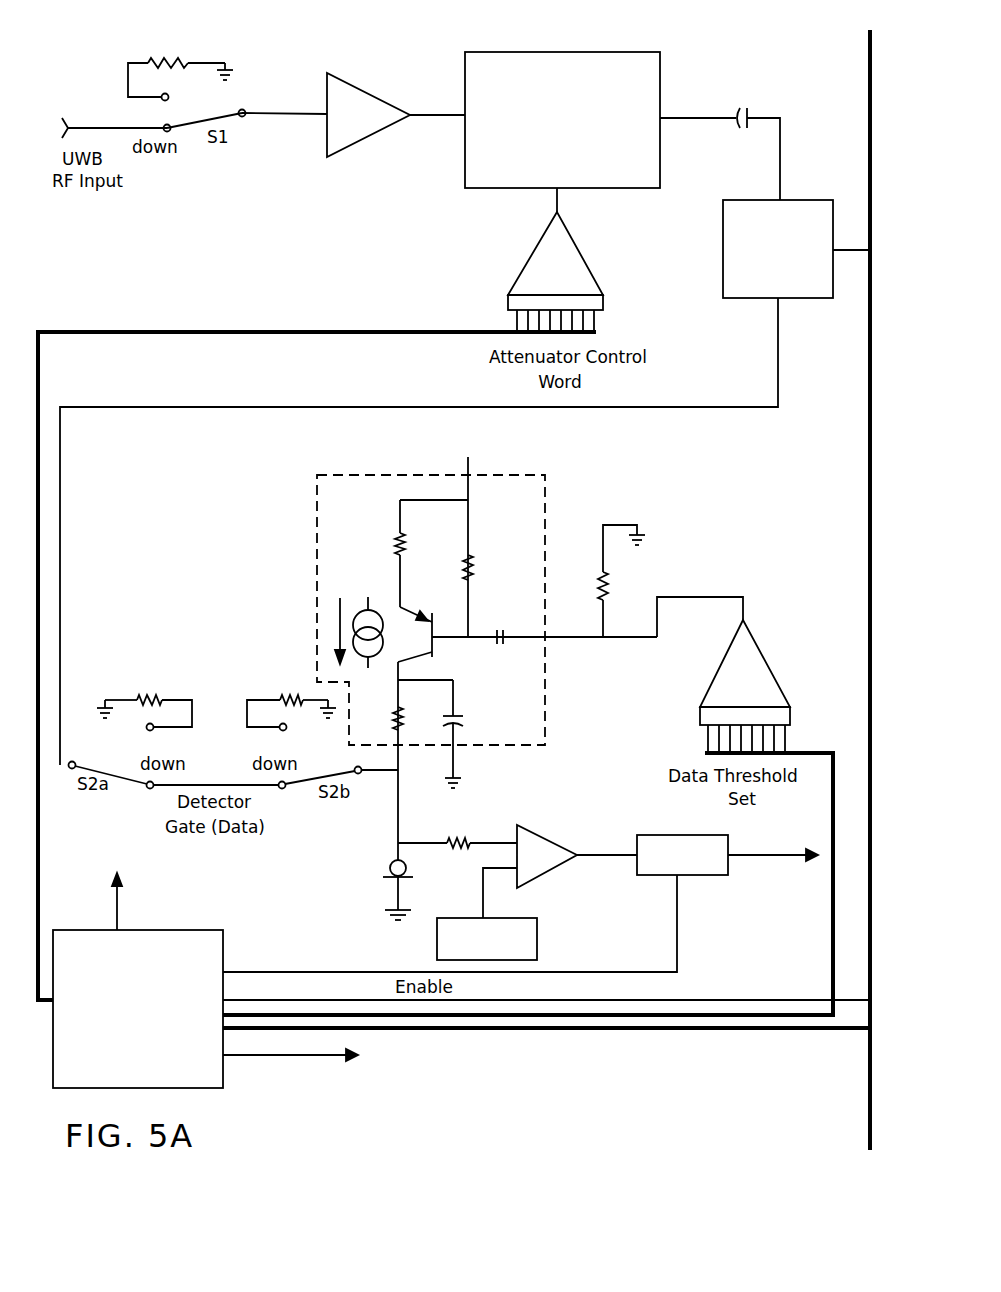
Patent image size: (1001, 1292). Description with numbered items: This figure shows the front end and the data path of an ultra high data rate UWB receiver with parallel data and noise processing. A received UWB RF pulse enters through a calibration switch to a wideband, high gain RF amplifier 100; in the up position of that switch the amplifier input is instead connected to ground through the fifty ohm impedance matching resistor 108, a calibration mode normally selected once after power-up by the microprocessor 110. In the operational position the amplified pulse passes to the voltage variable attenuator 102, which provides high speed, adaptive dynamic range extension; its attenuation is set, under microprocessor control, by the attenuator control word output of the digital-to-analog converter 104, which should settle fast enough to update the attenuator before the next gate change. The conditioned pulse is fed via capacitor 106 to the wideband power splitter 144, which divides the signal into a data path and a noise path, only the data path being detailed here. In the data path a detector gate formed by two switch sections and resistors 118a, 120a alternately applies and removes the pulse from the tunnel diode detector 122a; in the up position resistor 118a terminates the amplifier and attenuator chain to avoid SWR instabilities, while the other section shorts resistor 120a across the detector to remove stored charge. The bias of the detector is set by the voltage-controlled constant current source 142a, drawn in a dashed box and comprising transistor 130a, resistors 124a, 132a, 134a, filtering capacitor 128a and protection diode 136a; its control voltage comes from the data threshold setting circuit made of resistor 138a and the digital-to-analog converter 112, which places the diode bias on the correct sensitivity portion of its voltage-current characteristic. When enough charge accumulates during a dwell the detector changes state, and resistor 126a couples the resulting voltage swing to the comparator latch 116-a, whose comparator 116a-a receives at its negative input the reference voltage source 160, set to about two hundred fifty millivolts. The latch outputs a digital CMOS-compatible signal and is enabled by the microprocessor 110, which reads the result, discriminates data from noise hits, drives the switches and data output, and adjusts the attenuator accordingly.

The impedance matching resistor 108 is at (166, 56).
The RF amplifier 100 is at (368, 93).
The voltage variable attenuator 102 is at (645, 52).
The capacitor 106 is at (752, 110).
The wideband power splitter 144 is at (816, 200).
The digital-to-analog converter 104 is at (578, 250).
The voltage-controlled constant current source 142a is at (487, 657).
The resistor 132a is at (395, 545).
The resistor 134a is at (463, 572).
The protection diode 136a is at (498, 628).
The transistor 130a is at (437, 641).
The resistor 138a is at (607, 587).
The digital-to-analog converter 112 is at (757, 647).
The resistor 118a is at (136, 691).
The resistor 120a is at (282, 696).
The resistor 124a is at (428, 714).
The filtering capacitor 128a is at (460, 716).
The tunnel diode detector 122a is at (390, 862).
The resistor 126a is at (457, 828).
The comparator 116a-a is at (547, 838).
The comparator latch 116-a is at (693, 835).
The reference voltage source 160 is at (527, 918).
The microprocessor 110 is at (224, 940).